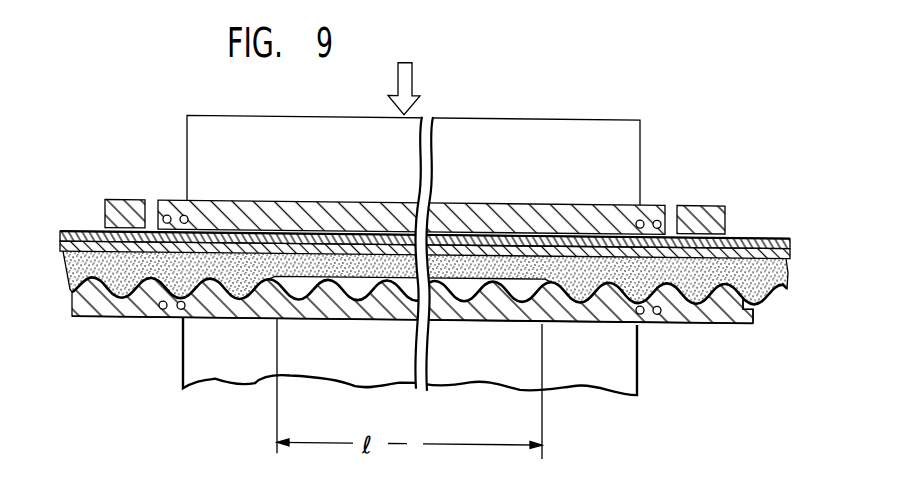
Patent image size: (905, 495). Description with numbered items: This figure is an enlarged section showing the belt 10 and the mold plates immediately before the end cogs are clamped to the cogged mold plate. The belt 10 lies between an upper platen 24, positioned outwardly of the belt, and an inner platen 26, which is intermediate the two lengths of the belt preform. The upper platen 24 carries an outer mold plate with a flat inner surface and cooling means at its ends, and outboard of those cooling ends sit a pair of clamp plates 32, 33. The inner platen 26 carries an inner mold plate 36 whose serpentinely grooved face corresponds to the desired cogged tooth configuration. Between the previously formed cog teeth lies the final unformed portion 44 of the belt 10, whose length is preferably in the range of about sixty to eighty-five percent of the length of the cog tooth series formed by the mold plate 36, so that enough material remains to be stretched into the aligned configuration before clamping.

The belt 10 is at (763, 236).
The upper platen 24 is at (283, 128).
The inner platen 26 is at (225, 367).
The clamp plate 32 is at (128, 200).
The clamp plate 33 is at (702, 205).
The inner mold plate 36 is at (493, 318).
The final unformed portion 44 is at (498, 257).